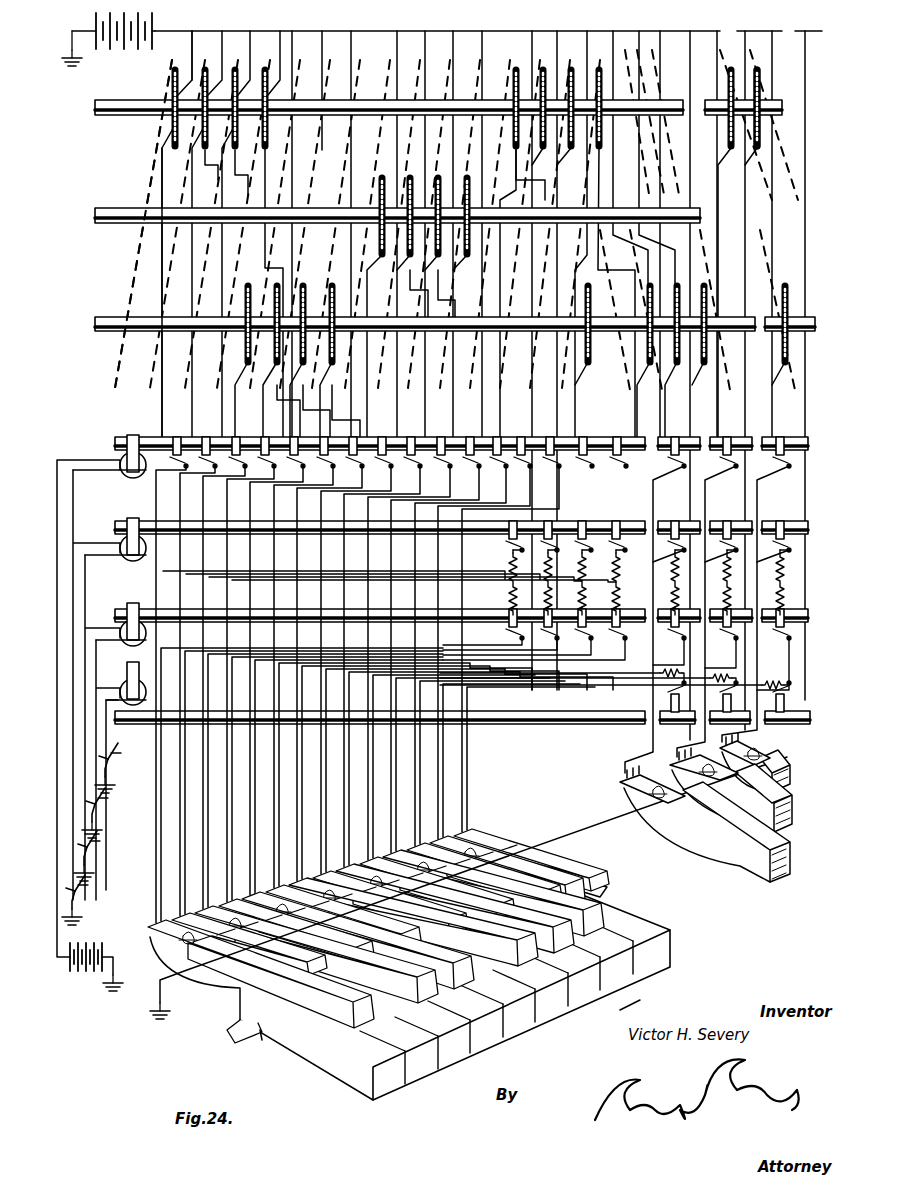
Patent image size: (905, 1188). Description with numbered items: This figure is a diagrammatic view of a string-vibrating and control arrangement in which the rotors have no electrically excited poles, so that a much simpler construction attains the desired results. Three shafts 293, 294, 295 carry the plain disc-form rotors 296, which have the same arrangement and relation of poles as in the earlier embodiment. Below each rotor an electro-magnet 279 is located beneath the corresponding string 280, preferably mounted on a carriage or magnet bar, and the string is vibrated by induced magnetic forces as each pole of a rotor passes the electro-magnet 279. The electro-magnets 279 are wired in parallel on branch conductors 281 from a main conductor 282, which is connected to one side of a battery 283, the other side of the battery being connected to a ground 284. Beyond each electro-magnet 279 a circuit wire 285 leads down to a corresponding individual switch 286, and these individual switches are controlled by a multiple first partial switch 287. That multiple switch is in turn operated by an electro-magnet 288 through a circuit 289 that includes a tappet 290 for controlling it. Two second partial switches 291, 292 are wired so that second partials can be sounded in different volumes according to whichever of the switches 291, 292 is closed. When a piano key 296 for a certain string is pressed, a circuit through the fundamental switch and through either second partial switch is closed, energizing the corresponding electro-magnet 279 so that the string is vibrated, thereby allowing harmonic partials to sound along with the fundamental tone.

The electro-magnet 279 is at (175, 103).
The string 280 is at (153, 234).
The branch conductor 281 is at (191, 47).
The main conductor 282 is at (262, 30).
The battery 283 is at (144, 56).
The ground 284 is at (65, 70).
The circuit wire 285 is at (160, 408).
The individual switch 286 is at (177, 446).
The first partial switch 287 is at (803, 443).
The electro-magnet 288 is at (137, 479).
The circuit 289 is at (85, 480).
The tappet 290 is at (110, 759).
The second partial switch 291 is at (803, 527).
The second partial switch 292 is at (803, 615).
The shaft 293 is at (765, 105).
The shaft 294 is at (700, 218).
The shaft 295 is at (700, 318).
The rotor 296 is at (171, 137).